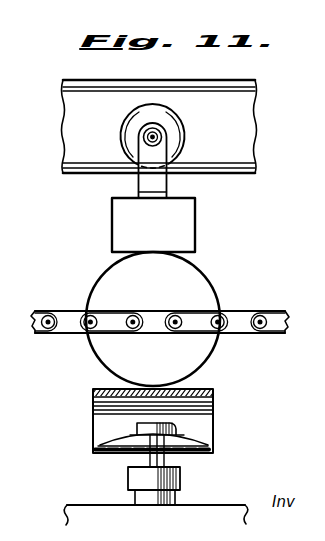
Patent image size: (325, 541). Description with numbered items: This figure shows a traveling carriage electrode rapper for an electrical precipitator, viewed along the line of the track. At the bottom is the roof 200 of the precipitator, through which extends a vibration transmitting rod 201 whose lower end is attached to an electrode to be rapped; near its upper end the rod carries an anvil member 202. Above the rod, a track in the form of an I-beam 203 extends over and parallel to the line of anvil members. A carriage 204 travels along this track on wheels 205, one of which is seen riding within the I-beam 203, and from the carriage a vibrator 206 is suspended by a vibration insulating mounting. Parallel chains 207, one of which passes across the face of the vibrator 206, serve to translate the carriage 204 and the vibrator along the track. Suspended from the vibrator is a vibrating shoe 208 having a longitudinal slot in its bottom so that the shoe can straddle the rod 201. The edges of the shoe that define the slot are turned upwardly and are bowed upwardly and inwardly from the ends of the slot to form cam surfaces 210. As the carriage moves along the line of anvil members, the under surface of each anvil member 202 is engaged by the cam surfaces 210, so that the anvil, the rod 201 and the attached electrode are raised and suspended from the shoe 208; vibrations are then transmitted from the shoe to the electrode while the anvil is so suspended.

The roof 200 is at (85, 504).
The vibration transmitting rod 201 is at (163, 461).
The anvil member 202 is at (134, 430).
The I-beam track 203 is at (239, 142).
The carriage 204 is at (182, 224).
The wheel 205 is at (177, 129).
The vibrator 206 is at (190, 282).
The chain 207 is at (243, 312).
The vibrating shoe 208 is at (208, 390).
The cam surface 210 is at (191, 441).